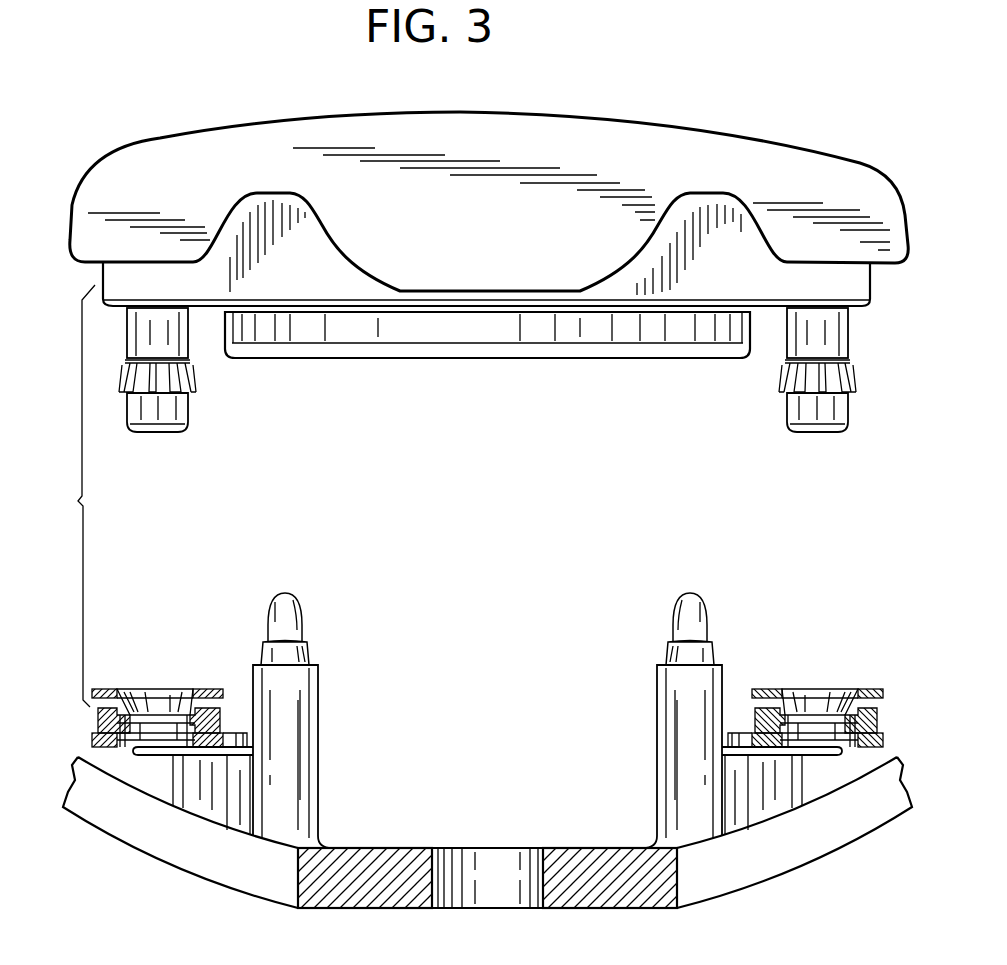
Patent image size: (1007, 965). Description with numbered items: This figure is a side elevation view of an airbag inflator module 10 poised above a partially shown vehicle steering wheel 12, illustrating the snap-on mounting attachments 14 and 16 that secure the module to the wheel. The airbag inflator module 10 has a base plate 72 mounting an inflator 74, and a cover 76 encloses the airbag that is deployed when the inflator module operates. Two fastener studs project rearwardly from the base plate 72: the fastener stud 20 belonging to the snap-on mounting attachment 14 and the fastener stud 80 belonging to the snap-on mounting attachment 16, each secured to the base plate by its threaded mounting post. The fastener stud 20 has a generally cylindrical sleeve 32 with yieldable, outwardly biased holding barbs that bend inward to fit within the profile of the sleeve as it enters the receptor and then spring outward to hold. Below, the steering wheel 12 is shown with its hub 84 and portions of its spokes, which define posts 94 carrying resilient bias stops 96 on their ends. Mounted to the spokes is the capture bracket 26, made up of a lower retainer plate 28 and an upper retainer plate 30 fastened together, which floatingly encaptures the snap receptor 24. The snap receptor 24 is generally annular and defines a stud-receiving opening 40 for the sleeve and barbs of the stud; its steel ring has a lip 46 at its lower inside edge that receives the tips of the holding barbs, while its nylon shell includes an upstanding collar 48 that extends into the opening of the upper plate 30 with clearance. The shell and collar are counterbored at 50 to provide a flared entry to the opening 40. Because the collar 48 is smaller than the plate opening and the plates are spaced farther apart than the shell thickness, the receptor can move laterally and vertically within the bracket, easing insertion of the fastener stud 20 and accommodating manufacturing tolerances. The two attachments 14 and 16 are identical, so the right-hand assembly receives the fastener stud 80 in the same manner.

The airbag inflator module 10 is at (165, 130).
The cover 76 is at (617, 127).
The steering wheel 12 is at (167, 869).
The snap-on mounting attachment 14 is at (261, 494).
The snap-on mounting attachment 16 is at (690, 524).
The fastener stud 20 is at (193, 413).
The snap receptor 24 is at (183, 706).
The capture bracket 26 is at (101, 691).
The lower retainer plate 28 is at (92, 741).
The upper retainer plate 30 is at (204, 693).
The cylindrical sleeve 32 is at (187, 340).
The stud-receiving opening 40 is at (156, 691).
The lip 46 is at (137, 757).
The upstanding collar 48 is at (97, 713).
The counterbore 50 is at (147, 697).
The base plate 72 is at (777, 317).
The inflator 74 is at (435, 360).
The fastener stud 80 is at (848, 408).
The hub 84 is at (362, 898).
The post 94 is at (304, 728).
The resilient bias stop 96 is at (300, 615).